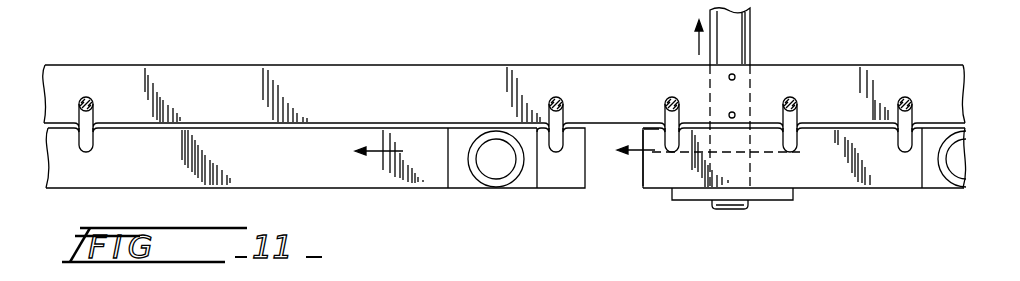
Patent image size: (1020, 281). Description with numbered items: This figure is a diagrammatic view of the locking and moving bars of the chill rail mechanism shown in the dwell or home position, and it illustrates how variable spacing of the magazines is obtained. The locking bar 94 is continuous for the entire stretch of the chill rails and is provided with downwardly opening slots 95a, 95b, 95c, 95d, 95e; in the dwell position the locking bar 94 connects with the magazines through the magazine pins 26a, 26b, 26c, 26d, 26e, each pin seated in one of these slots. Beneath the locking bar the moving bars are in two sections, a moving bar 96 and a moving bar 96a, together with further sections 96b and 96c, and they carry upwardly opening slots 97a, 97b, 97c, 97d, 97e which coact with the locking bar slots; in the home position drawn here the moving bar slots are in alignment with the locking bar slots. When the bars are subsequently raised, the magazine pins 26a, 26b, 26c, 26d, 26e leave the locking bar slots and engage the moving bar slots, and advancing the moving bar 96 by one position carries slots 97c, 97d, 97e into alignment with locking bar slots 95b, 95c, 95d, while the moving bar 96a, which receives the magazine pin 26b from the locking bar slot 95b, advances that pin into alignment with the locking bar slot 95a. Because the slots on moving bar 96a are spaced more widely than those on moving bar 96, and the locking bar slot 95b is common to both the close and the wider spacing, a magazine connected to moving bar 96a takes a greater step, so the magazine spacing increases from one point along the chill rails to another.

The magazine pin 26a is at (95, 97).
The magazine pin 26b is at (556, 97).
The magazine pin 26c is at (670, 97).
The magazine pin 26d is at (788, 97).
The magazine pin 26e is at (904, 97).
The locking bar 94 is at (308, 86).
The locking bar slot 95a is at (95, 110).
The locking bar slot 95b is at (564, 105).
The locking bar slot 95c is at (665, 113).
The locking bar slot 95d is at (797, 104).
The locking bar slot 95e is at (912, 104).
The moving bar 96 is at (838, 163).
The moving bar 96a is at (281, 186).
The lower strip section 96b is at (642, 182).
The lower strip section 96c is at (587, 188).
The moving bar slot 97a is at (93, 148).
The moving bar slot 97b is at (562, 147).
The moving bar slot 97c is at (681, 130).
The moving bar slot 97d is at (806, 136).
The moving bar slot 97e is at (910, 134).